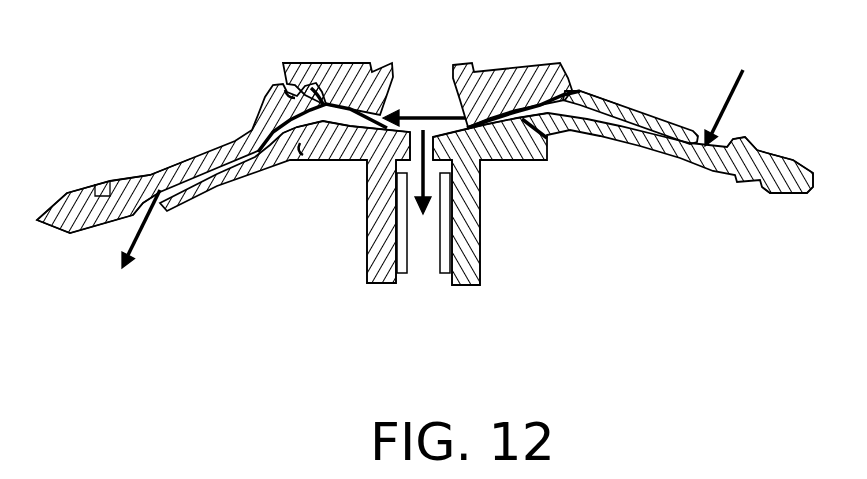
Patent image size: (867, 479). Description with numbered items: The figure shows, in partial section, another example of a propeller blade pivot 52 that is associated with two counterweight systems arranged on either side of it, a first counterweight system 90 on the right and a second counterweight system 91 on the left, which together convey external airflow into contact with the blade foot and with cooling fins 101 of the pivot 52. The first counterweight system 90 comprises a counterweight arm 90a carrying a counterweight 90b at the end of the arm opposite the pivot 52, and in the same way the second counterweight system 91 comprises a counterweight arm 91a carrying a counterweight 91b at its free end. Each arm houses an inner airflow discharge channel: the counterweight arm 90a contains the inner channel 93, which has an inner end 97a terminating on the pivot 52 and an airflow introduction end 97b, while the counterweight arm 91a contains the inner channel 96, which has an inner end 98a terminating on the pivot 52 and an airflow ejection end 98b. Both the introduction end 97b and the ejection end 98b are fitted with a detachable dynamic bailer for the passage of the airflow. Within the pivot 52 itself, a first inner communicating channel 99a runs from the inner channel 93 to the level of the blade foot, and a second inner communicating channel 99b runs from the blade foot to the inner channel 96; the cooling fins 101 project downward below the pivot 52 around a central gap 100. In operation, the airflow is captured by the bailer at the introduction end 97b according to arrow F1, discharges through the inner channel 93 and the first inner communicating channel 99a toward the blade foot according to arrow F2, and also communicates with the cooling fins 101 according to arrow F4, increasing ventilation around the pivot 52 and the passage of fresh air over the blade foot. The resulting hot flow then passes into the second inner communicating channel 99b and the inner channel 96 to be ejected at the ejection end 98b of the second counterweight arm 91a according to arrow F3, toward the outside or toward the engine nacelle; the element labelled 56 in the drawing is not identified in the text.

The pivot 52 is at (500, 83).
The seal member 56 is at (417, 97).
The first counterweight system 90 is at (730, 160).
The counterweight arm 90a is at (587, 85).
The counterweight 90b is at (780, 197).
The second counterweight system 91 is at (257, 122).
The counterweight arm 91a is at (150, 175).
The counterweight 91b is at (78, 212).
The inner channel 93 is at (660, 128).
The inner channel 96 is at (210, 177).
The inner end 97a is at (560, 150).
The airflow introduction end 97b is at (730, 140).
The inner end 98a is at (333, 75).
The airflow ejection end 98b is at (140, 215).
The first inner communicating channel 99a is at (495, 140).
The second inner communicating channel 99b is at (355, 135).
The gap 100 is at (423, 283).
The cooling fins 101 is at (397, 255).
The arrow F1 is at (738, 97).
The arrow F2 is at (433, 116).
The arrow F3 is at (143, 235).
The arrow F4 is at (443, 188).